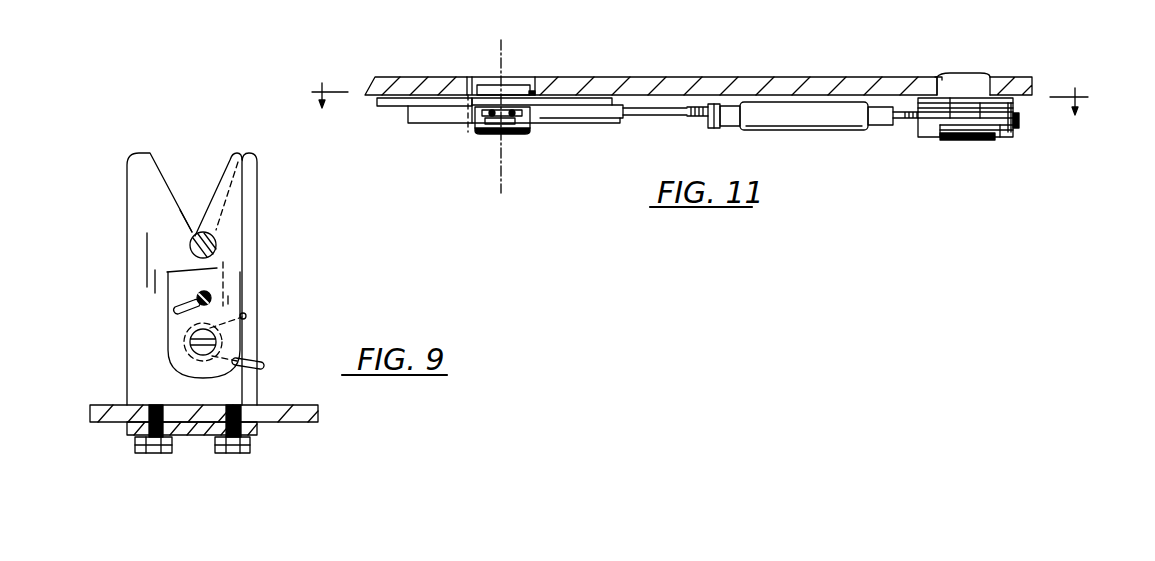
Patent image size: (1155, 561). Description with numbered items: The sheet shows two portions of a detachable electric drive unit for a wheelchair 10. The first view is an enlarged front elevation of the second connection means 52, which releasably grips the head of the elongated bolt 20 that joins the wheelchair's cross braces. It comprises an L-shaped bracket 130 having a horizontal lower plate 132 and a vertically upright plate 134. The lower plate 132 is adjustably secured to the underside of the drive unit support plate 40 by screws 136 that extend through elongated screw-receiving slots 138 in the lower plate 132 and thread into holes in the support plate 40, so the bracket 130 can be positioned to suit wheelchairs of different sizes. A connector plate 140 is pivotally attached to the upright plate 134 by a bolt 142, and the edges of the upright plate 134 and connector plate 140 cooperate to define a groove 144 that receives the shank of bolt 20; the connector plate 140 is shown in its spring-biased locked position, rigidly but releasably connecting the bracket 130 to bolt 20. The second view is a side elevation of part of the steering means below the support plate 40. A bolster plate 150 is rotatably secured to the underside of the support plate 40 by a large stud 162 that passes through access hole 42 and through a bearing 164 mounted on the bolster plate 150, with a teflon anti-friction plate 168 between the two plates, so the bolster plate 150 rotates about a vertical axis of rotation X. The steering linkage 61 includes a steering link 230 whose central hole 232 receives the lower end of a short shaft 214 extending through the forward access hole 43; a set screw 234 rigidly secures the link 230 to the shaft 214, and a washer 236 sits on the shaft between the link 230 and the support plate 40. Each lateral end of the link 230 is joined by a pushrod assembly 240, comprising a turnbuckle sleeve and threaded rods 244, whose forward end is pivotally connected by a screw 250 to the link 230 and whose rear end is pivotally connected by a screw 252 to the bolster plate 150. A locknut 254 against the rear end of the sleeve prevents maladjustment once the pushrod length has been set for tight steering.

In FIG. 11, the wheelchair 10 is at (699, 99).
In FIG. 9, the elongated bolt 20 is at (197, 240).
In FIG. 9, the support plate 40 is at (104, 403).
In FIG. 11, the support plate 40 is at (818, 58).
In FIG. 11, the access hole 42 is at (482, 77).
In FIG. 11, the access hole 43 is at (950, 73).
In FIG. 9, the second connection means 52 is at (272, 288).
In FIG. 11, the steering linkage 61 is at (882, 145).
In FIG. 9, the L-shaped bracket 130 is at (258, 380).
In FIG. 9, the lower plate 132 is at (197, 440).
In FIG. 9, the upright plate 134 is at (258, 326).
In FIG. 9, the screws 136 is at (140, 450).
In FIG. 9, the screw-receiving slots 138 is at (128, 433).
In FIG. 9, the connector plate 140 is at (250, 226).
In FIG. 9, the bolt 142 is at (185, 344).
In FIG. 9, the groove 144 is at (190, 246).
In FIG. 11, the bolster plate 150 is at (430, 118).
In FIG. 11, the stud 162 is at (523, 134).
In FIG. 11, the bearing 164 is at (466, 130).
In FIG. 11, the anti-friction plate 168 is at (403, 106).
In FIG. 11, the shaft 214 is at (973, 82).
In FIG. 11, the steering link 230 is at (928, 138).
In FIG. 11, the central hole 232 is at (980, 150).
In FIG. 11, the set screw 234 is at (1020, 125).
In FIG. 11, the washer 236 is at (1017, 101).
In FIG. 11, the pushrod assembly 240 is at (790, 130).
In FIG. 11, the rods 244 is at (663, 122).
In FIG. 11, the screw 250 is at (960, 140).
In FIG. 11, the screw 252 is at (485, 134).
In FIG. 11, the locknut 254 is at (716, 128).
In FIG. 11, the vertical axis of rotation X is at (501, 185).